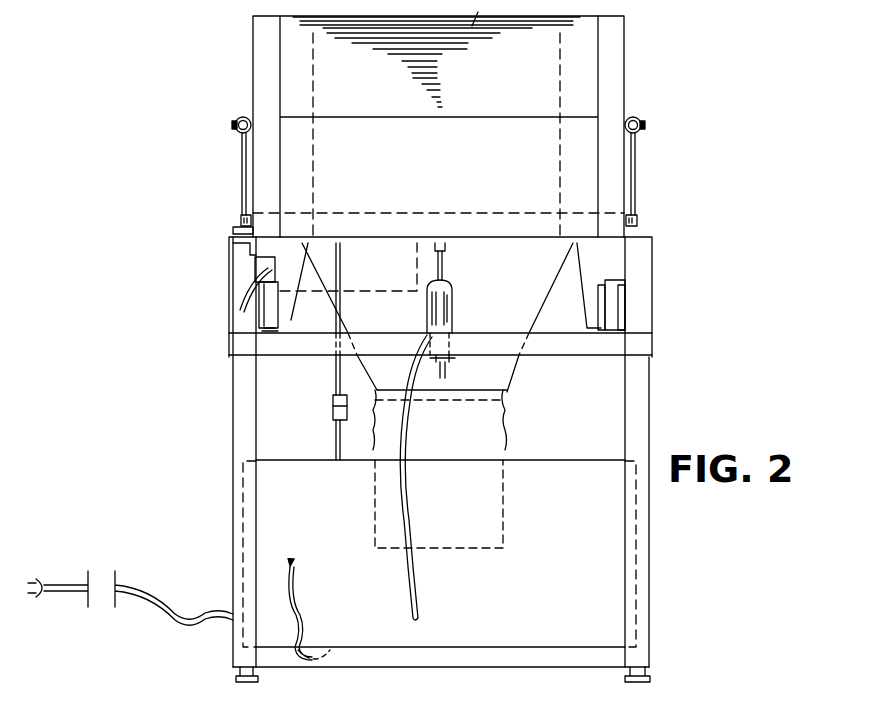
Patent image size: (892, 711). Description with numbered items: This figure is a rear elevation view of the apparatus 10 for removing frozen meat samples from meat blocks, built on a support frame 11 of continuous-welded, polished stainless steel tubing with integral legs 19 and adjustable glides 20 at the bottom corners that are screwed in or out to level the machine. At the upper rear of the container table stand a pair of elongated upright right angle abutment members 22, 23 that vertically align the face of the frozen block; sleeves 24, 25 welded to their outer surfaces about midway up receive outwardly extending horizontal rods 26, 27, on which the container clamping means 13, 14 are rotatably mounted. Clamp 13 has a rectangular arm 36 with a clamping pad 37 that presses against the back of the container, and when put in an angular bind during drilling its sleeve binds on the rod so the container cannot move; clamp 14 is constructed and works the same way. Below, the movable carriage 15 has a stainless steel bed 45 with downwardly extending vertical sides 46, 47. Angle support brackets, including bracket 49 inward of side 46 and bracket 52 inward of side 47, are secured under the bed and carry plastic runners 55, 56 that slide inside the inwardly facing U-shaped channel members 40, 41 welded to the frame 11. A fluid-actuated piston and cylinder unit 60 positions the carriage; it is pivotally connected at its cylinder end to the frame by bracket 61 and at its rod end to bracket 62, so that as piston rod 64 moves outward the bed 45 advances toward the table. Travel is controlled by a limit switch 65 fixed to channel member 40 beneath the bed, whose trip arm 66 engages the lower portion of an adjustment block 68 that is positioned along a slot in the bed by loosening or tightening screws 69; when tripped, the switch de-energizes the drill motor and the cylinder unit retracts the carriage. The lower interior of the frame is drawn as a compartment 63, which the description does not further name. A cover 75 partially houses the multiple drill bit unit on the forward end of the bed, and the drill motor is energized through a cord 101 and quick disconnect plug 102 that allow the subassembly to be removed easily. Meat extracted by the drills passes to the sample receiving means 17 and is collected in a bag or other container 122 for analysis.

The apparatus 10 is at (668, 55).
The frame 11 is at (652, 402).
The container clamping means 13 is at (215, 163).
The container clamping means 14 is at (667, 156).
The movable carriage 15 is at (575, 298).
The sample receiving means 17 is at (513, 385).
The legs 19 is at (240, 562).
The adjustable glides 20 is at (238, 676).
The upright right angle abutment member 22 is at (560, 72).
The upright right angle abutment member 23 is at (313, 95).
The sleeve 24 is at (243, 115).
The sleeve 25 is at (634, 115).
The horizontal rod 26 is at (232, 121).
The horizontal rod 27 is at (643, 124).
The rectangular arm 36 is at (243, 176).
The clamping pad 37 is at (240, 218).
The channel member 40 is at (240, 330).
The channel member 41 is at (622, 288).
The bed 45 is at (408, 238).
The vertical side 46 is at (232, 300).
The vertical side 47 is at (653, 256).
The angle support bracket 49 is at (291, 322).
The angle bracket 52 is at (578, 262).
The plastic runner 55 is at (267, 303).
The plastic runner 56 is at (621, 306).
The piston and cylinder unit 60 is at (457, 300).
The bracket 61 is at (448, 366).
The bracket 62 is at (446, 246).
The lower compartment 63 is at (298, 483).
The piston rod 64 is at (437, 263).
The limit switch 65 is at (272, 256).
The trip arm 66 is at (247, 262).
The block 68 is at (238, 245).
The screws 69 is at (233, 231).
The cover 75 is at (465, 13).
The cord 101 is at (338, 387).
The quick disconnect plug 102 is at (337, 408).
The bag or other container 122 is at (505, 442).